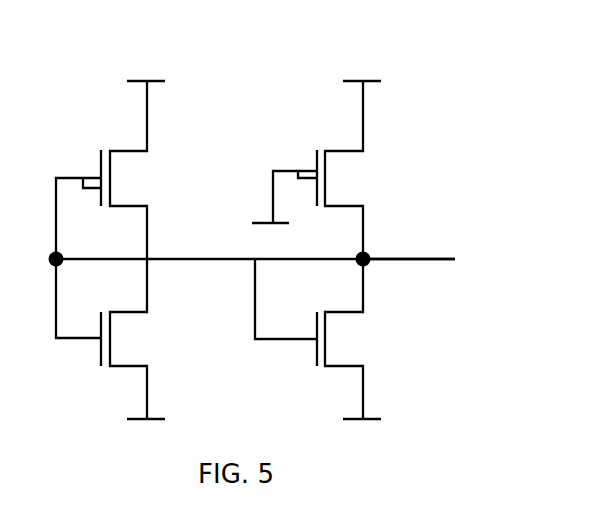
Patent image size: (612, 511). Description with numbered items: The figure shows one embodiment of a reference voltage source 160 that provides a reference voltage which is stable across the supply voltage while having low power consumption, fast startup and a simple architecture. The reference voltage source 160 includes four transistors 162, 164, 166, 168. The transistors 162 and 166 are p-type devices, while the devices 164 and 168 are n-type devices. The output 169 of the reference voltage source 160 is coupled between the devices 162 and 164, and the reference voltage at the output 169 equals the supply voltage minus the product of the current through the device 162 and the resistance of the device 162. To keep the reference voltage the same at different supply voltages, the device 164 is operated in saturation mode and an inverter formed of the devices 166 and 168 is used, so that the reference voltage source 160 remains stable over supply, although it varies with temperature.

The reference voltage source 160 is at (209, 56).
The transistor 162 is at (396, 188).
The transistor 164 is at (396, 340).
The transistor 166 is at (181, 188).
The transistor 168 is at (166, 338).
The output 169 is at (417, 259).